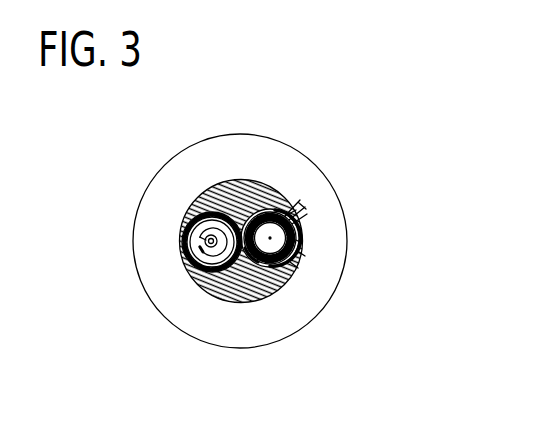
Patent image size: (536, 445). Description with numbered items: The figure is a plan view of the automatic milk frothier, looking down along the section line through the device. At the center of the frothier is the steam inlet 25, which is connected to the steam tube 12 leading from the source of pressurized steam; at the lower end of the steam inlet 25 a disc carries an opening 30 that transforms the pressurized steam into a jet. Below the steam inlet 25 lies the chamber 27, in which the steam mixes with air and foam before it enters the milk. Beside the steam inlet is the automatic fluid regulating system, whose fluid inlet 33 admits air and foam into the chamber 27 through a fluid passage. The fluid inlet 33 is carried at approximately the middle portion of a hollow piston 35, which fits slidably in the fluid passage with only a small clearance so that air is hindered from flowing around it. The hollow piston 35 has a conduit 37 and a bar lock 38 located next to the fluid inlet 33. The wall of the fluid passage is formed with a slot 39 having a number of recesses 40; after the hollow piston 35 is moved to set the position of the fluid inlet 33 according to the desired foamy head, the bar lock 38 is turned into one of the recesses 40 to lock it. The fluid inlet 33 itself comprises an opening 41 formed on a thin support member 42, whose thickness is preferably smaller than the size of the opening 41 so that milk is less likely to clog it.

The chamber 27 is at (242, 152).
The conduit 37 is at (272, 215).
The bar lock 38 is at (297, 205).
The recesses 40 is at (303, 222).
The support member 42 is at (300, 232).
The opening 41 is at (303, 243).
The fluid inlet 33 is at (312, 260).
The slot 39 is at (300, 267).
The hollow piston 35 is at (290, 278).
The opening 30 is at (187, 237).
The steam tube 12 is at (200, 254).
The steam inlet 25 is at (187, 277).